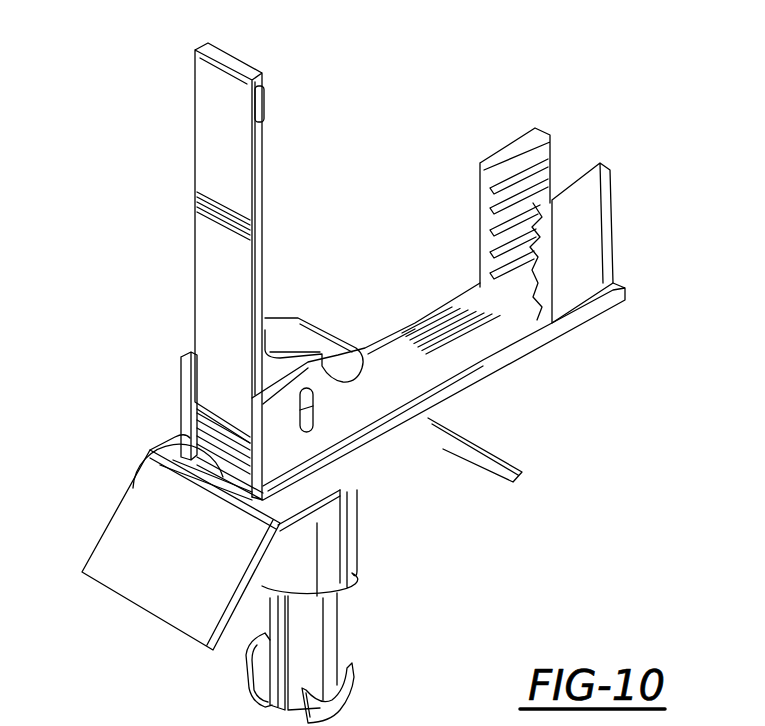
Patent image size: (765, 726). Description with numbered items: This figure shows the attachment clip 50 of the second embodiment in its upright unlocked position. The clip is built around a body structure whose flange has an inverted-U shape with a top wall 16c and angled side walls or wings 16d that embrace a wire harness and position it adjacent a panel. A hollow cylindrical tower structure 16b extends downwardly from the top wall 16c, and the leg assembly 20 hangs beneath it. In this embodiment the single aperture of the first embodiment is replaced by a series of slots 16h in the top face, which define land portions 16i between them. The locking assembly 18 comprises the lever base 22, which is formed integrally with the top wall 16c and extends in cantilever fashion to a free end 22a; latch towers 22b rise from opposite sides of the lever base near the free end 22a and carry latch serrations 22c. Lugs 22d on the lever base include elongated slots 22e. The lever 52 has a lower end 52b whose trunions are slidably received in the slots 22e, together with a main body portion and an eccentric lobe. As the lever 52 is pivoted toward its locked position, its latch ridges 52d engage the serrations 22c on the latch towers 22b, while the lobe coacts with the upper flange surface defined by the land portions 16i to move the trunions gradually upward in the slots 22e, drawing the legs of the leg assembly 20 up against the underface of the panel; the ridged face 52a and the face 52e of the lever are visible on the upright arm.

The locking assembly 18 is at (352, 288).
The leg assembly 20 is at (352, 605).
The lever base 22 is at (614, 324).
The free end 22a is at (613, 284).
The latch towers 22b is at (503, 141).
The latch serrations 22c is at (515, 245).
The lugs 22d is at (182, 393).
The elongated slots 22e is at (312, 425).
The tower structure 16b is at (357, 543).
The top wall 16c is at (425, 430).
The wings 16d is at (137, 520).
The slots 16h is at (133, 488).
The land portions 16i is at (182, 431).
The attachment clip 50 is at (168, 316).
The lever 52 is at (288, 220).
The gripping ridges 52a is at (208, 232).
The lower end 52b is at (360, 352).
The latch ridges 52d is at (263, 110).
The arm face 52e is at (195, 130).